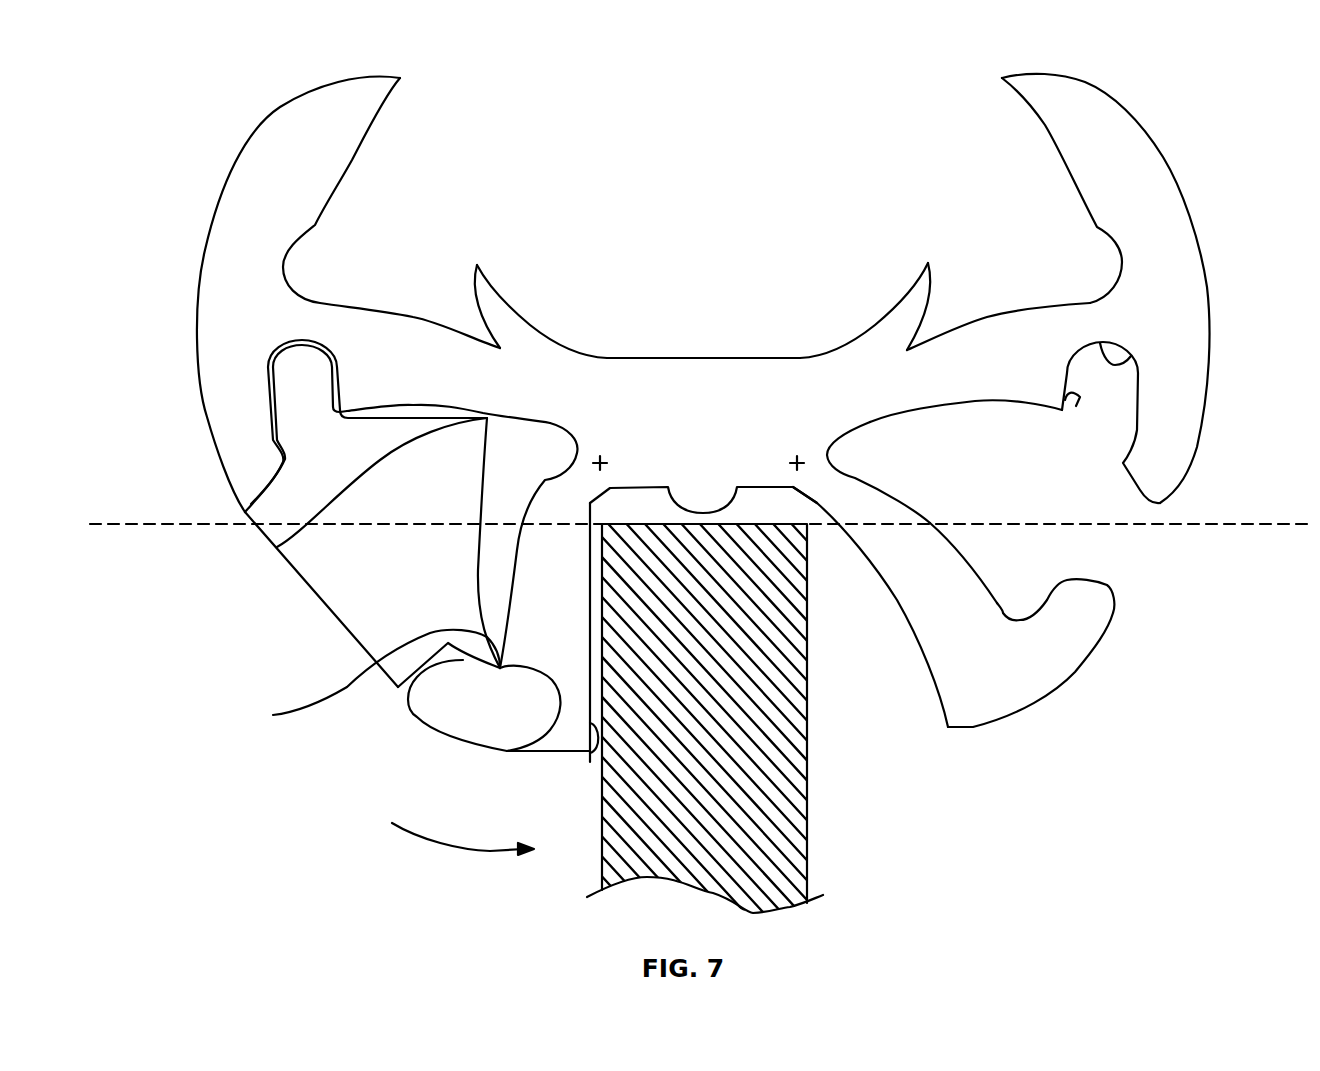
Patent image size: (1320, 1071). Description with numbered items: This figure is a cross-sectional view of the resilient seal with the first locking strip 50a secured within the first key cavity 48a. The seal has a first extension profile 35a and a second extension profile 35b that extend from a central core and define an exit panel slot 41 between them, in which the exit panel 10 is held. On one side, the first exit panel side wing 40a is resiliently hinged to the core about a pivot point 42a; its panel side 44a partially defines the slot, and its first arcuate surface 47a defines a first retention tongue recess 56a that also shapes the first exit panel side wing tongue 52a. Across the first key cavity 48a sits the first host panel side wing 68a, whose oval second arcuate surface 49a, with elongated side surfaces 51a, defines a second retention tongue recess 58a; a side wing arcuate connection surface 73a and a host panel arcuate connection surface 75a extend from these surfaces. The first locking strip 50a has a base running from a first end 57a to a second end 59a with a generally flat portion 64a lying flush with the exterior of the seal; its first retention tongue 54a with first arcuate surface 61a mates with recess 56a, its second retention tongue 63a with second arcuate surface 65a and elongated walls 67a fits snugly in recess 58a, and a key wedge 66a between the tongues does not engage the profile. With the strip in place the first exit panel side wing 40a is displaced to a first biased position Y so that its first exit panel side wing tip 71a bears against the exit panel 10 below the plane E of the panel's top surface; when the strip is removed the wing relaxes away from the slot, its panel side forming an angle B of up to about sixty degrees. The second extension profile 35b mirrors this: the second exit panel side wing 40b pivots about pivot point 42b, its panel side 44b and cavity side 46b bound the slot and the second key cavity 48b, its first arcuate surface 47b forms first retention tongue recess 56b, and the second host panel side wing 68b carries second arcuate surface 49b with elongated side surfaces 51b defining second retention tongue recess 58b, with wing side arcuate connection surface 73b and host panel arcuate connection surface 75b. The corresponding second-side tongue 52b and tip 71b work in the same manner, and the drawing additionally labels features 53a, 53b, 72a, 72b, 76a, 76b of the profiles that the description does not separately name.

The exit panel 10 is at (810, 870).
The first extension profile 35a is at (316, 648).
The second extension profile 35b is at (1120, 697).
The first exit panel side wing 40a is at (534, 727).
The second exit panel side wing 40b is at (1018, 693).
The exit panel slot 41 is at (852, 670).
The pivot point 42a is at (603, 457).
The pivot point 42b is at (798, 457).
The panel side 44a is at (590, 762).
The panel side 44b is at (910, 620).
The cavity side 46b is at (970, 557).
The first arcuate surface 47a is at (357, 882).
The first arcuate surface 47b is at (1018, 622).
The first key cavity 48a is at (527, 440).
The second key cavity 48b is at (1090, 524).
The second arcuate surface 49a is at (285, 345).
The second arcuate surface 49b is at (1085, 343).
The first locking strip 50a is at (373, 561).
The elongated side surfaces 51a is at (270, 350).
The elongated side surfaces 51b is at (1062, 408).
The first exit panel side wing tongue 52a is at (438, 703).
The second clip 52b is at (1093, 603).
The first lobe 53a is at (557, 420).
The second lobe 53b is at (880, 420).
The first retention tongue 54a is at (358, 680).
The first retention tongue recess 56a is at (303, 343).
The first retention tongue recess 56b is at (1028, 617).
The first end 57a is at (402, 685).
The second retention tongue recess 58a is at (323, 345).
The second retention tongue recess 58b is at (1133, 357).
The second end 59a is at (247, 510).
The first arcuate surface 61a is at (507, 650).
The second retention tongue 63a is at (290, 370).
The flat portion 64a is at (310, 586).
The second arcuate surface 65a is at (278, 347).
The key wedge 66a is at (277, 547).
The elongated walls 67a is at (322, 367).
The first host panel side wing 68a is at (287, 117).
The second host panel side wing 68b is at (1158, 163).
The first exit panel side wing tip 71a is at (580, 750).
The corner 71b is at (960, 733).
The blade notch 72a is at (288, 253).
The blade notch 72b is at (1117, 260).
The side wing arcuate connection surface 73a is at (513, 548).
The wing side arcuate connection surface 73b is at (930, 523).
The host panel arcuate connection surface 75a is at (440, 400).
The host panel arcuate connection surface 75b is at (950, 398).
The first fin 76a is at (478, 265).
The second fin 76b is at (907, 287).
The angle B is at (470, 853).
The plane E is at (1260, 522).
The first biased position Y is at (523, 706).